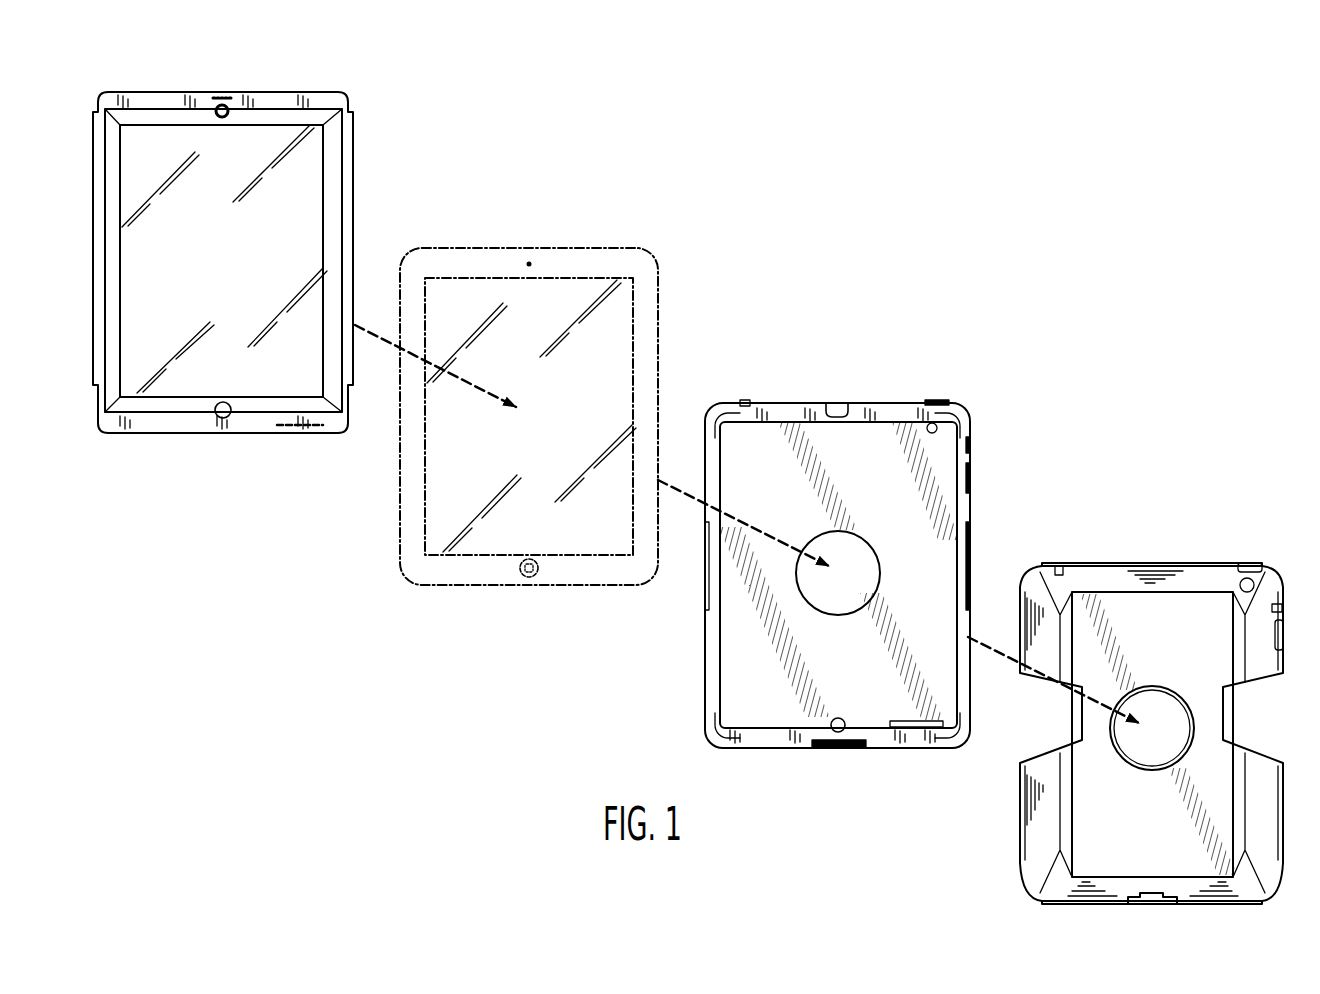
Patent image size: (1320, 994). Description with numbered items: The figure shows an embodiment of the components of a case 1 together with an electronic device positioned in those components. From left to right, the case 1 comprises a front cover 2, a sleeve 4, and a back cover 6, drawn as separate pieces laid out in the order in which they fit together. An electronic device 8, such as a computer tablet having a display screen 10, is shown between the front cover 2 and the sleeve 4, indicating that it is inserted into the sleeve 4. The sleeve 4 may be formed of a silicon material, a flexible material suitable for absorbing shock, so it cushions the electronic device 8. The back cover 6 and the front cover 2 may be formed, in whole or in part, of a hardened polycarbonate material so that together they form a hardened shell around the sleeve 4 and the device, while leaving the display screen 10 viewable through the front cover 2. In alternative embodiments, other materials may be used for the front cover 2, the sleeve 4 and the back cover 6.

The case 1 is at (732, 124).
The front cover 2 is at (270, 92).
The sleeve 4 is at (889, 404).
The back cover 6 is at (1203, 560).
The electronic device 8 is at (583, 247).
The display screen 10 is at (607, 370).